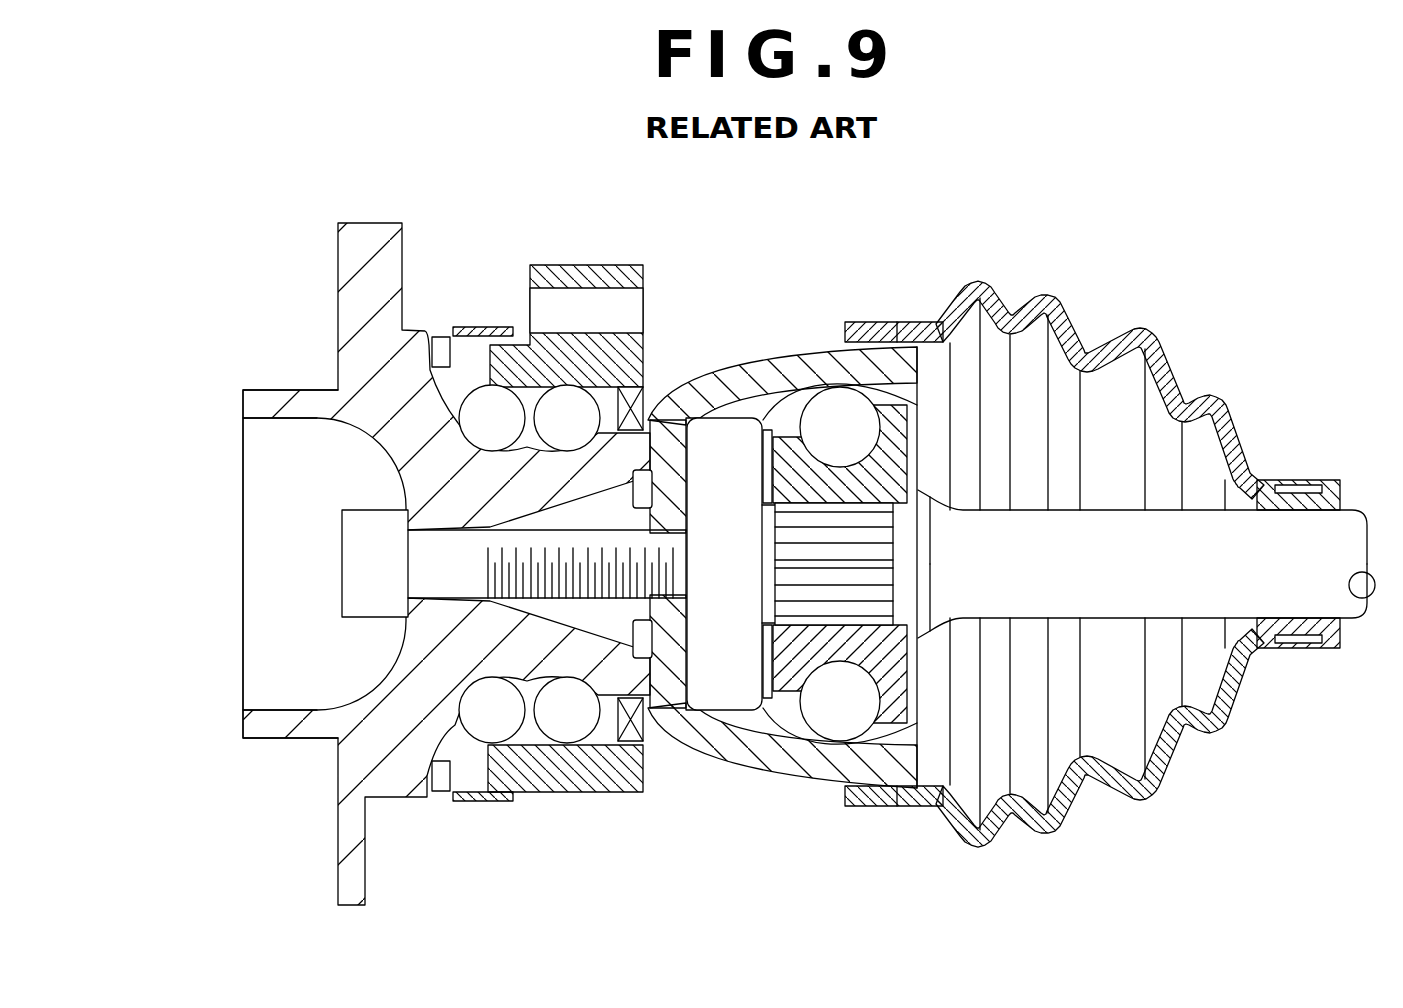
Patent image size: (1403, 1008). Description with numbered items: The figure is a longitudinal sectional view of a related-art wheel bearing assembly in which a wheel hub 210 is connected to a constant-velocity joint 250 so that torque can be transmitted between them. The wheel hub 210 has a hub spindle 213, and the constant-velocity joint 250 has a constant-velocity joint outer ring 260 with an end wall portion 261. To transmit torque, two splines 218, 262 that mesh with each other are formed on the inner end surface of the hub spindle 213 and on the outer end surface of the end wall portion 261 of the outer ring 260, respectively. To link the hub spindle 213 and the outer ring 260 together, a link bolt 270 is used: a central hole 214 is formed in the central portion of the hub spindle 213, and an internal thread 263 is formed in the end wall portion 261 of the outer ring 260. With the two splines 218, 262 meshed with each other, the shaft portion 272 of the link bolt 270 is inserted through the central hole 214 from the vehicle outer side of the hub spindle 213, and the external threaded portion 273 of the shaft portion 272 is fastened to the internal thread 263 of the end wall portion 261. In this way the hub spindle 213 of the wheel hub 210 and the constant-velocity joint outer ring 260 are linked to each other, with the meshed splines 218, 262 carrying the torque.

The wheel hub 210 is at (316, 332).
The hub spindle 213 is at (557, 662).
The central hole 214 is at (450, 597).
The spline 218 is at (660, 677).
The constant-velocity joint 250 is at (817, 337).
The constant-velocity joint outer ring 260 is at (792, 363).
The end wall portion 261 is at (668, 450).
The spline 262 is at (653, 722).
The internal thread 263 is at (697, 550).
The link bolt 270 is at (338, 617).
The shaft portion 272 is at (450, 536).
The external threaded portion 273 is at (702, 577).